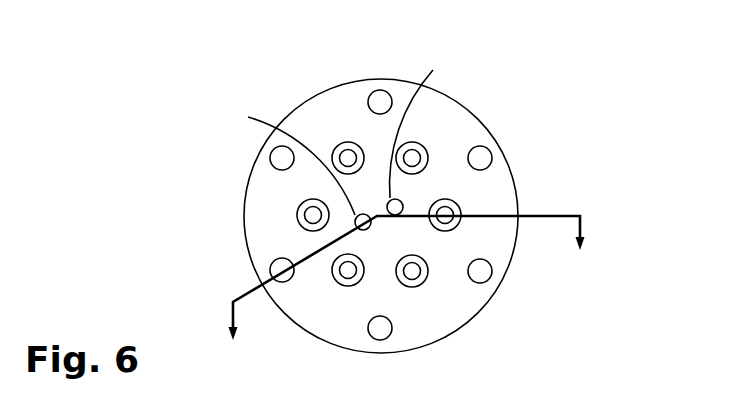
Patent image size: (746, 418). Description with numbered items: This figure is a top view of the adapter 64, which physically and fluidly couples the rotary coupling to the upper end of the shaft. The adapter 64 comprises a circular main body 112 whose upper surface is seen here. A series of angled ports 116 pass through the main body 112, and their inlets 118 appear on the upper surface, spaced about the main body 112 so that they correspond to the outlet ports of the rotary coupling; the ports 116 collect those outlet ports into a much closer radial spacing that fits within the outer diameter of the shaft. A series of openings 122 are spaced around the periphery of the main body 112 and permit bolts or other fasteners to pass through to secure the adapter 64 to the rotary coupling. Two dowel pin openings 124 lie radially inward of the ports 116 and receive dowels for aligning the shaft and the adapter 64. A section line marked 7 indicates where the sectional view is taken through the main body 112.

The adapter 64 is at (443, 182).
The main body 112 is at (330, 103).
The angled ports 116 is at (413, 275).
The inlet 118 is at (356, 208).
The openings 122 is at (384, 91).
The dowel pin openings 124 is at (249, 118).
The section line 7- 7 is at (408, 278).